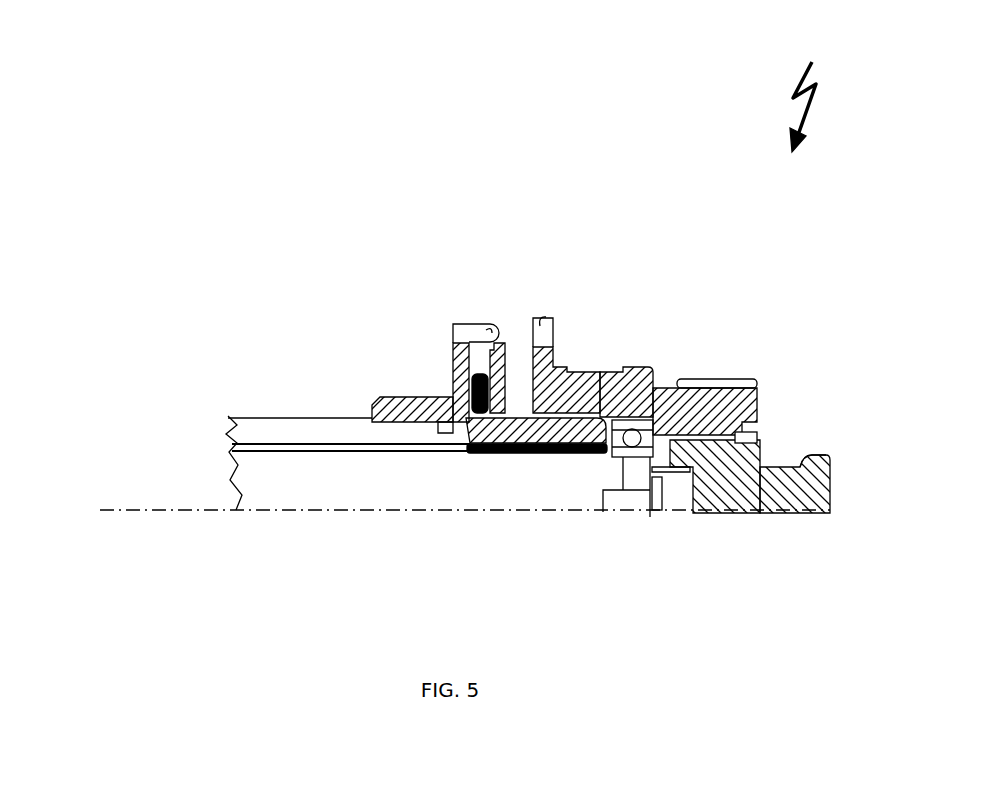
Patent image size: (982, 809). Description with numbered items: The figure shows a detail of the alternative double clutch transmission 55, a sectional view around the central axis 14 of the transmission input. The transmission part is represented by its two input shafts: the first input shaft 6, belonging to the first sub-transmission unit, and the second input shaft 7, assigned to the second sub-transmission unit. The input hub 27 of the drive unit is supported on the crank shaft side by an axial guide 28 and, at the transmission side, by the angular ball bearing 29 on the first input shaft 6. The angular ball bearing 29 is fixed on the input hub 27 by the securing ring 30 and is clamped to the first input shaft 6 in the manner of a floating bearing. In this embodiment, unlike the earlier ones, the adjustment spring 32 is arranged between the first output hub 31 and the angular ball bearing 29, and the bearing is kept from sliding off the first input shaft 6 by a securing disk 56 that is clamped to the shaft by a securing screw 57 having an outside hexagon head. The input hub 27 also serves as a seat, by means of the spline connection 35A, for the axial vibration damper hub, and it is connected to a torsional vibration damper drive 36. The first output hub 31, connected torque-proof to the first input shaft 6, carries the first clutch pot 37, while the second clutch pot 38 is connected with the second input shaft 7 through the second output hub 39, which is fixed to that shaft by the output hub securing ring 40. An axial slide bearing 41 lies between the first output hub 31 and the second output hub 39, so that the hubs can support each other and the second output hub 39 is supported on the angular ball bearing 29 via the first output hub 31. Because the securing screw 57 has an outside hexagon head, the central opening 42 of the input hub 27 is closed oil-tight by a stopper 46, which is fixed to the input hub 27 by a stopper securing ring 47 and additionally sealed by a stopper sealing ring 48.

The alternative double clutch transmission 55 is at (826, 80).
The axis of rotation 14 is at (102, 510).
The second input shaft 7 is at (272, 432).
The first input shaft 6 is at (297, 483).
The second output hub 39 is at (383, 424).
The output hub securing ring 40 is at (417, 424).
The second clutch pot 38 is at (464, 316).
The axial slide bearing 41 is at (473, 440).
The first clutch pot 37 is at (506, 370).
The torsional vibration damper drive 36 is at (549, 316).
The securing ring 30 is at (603, 366).
The input hub 27 is at (623, 368).
The stopper sealing ring 48 is at (725, 386).
The spline connection 35A is at (702, 379).
The adjustment spring 32 is at (594, 460).
The first output hub 31 is at (494, 455).
The angular ball bearing 29 is at (624, 466).
The securing disk 56 is at (641, 478).
The securing screw 57 is at (678, 500).
The central opening 42 is at (745, 442).
The stopper securing ring 47 is at (754, 468).
The stopper 46 is at (818, 493).
The axial guide 28 is at (821, 450).